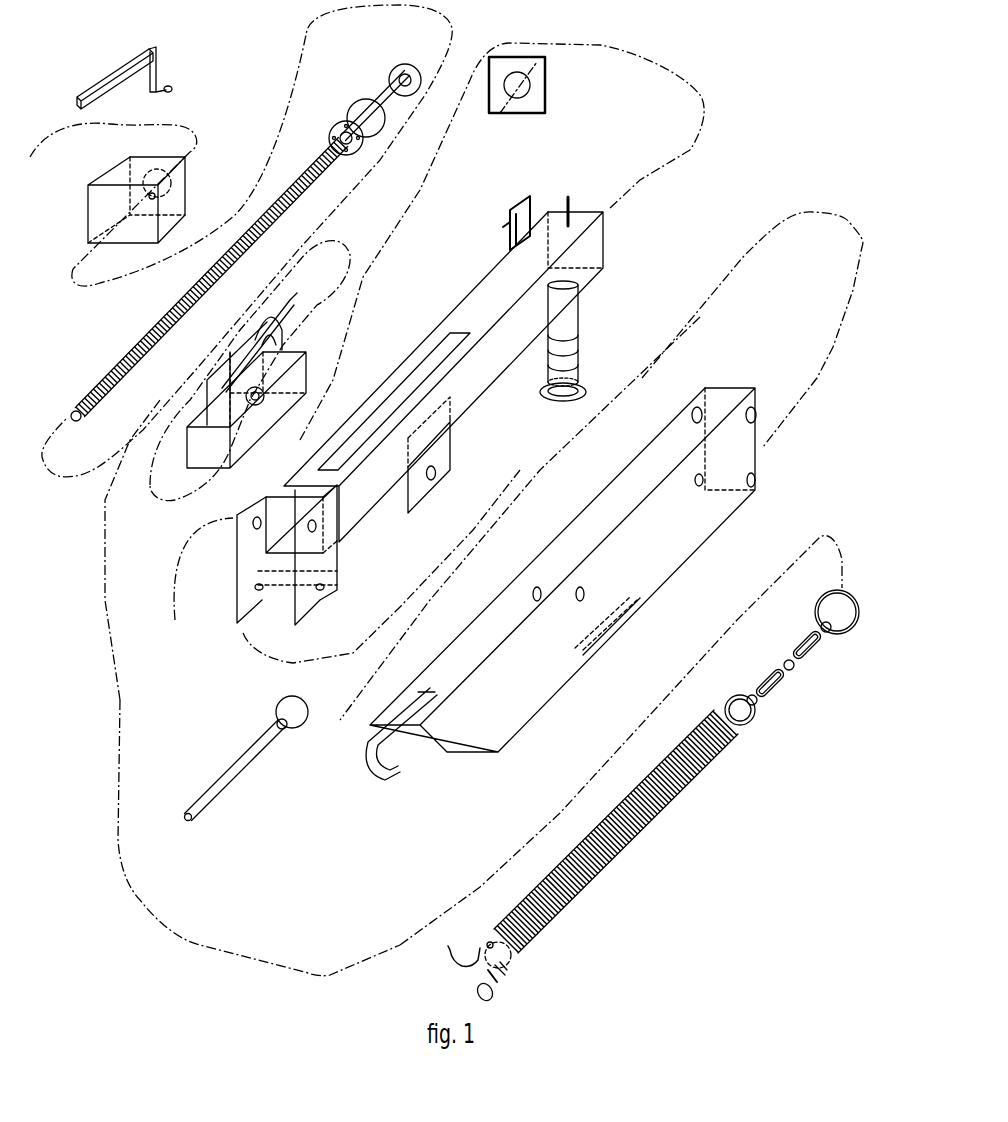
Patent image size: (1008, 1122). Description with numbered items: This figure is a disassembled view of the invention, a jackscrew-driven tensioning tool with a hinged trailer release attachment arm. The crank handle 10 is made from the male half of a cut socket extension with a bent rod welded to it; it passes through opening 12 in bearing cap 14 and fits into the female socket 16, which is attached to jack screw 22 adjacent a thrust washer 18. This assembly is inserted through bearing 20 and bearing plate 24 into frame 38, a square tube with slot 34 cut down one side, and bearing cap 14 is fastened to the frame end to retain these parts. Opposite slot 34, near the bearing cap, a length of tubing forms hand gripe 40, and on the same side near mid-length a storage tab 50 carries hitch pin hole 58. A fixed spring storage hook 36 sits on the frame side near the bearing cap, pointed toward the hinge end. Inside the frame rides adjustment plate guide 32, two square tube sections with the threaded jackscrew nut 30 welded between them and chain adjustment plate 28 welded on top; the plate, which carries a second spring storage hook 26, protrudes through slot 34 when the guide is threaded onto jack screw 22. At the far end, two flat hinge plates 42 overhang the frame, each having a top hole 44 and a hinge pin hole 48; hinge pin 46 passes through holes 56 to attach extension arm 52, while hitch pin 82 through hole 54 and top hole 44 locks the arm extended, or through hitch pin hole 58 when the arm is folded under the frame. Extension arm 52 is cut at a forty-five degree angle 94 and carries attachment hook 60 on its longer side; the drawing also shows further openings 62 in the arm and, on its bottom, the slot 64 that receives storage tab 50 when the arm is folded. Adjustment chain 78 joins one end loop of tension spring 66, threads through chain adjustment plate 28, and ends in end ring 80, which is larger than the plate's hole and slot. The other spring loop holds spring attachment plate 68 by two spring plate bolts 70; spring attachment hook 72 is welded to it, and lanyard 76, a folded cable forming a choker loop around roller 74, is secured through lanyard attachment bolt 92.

The crank handle 10 is at (100, 87).
The opening 12 is at (152, 197).
The bearing cap 14 is at (187, 167).
The socket 16 is at (404, 68).
The thrust washer 18 is at (353, 104).
The bearing 20 is at (329, 136).
The jack screw 22 is at (295, 207).
The bearing plate 24 is at (547, 72).
The second spring storage hook 26 is at (297, 293).
The chain adjustment plate 28 is at (283, 332).
The threaded jackscrew nut 30 is at (283, 416).
The adjustment plate guide 32 is at (187, 447).
The slot 34 is at (570, 203).
The fixed spring storage hook 36 is at (518, 223).
The frame 38 is at (422, 341).
The hand gripe 40 is at (578, 351).
The hinge plates 42 is at (298, 614).
The top hole 44 is at (311, 527).
The hinge pin 46 is at (326, 588).
The hinge pin hole 48 is at (320, 588).
The storage tab 50 is at (447, 445).
The extension arm 52 is at (595, 497).
The hole 54 is at (756, 415).
The holes 56 is at (755, 480).
The hitch pin hole 58 is at (436, 477).
The attachment hook 60 is at (370, 755).
The holes 62 is at (578, 587).
The slot 64 is at (613, 617).
The tension spring 66 is at (542, 887).
The spring attachment plate 68 is at (495, 940).
The spring plate bolts 70 is at (487, 945).
The spring attachment hook 72 is at (447, 955).
The roller 74 is at (486, 977).
The lanyard 76 is at (478, 992).
The adjustment chain 78 is at (797, 667).
The end ring 80 is at (860, 610).
The hitch pin 82 is at (238, 755).
The lanyard attachment bolt 92 is at (498, 973).
The forty-five degree angle 94 is at (457, 738).